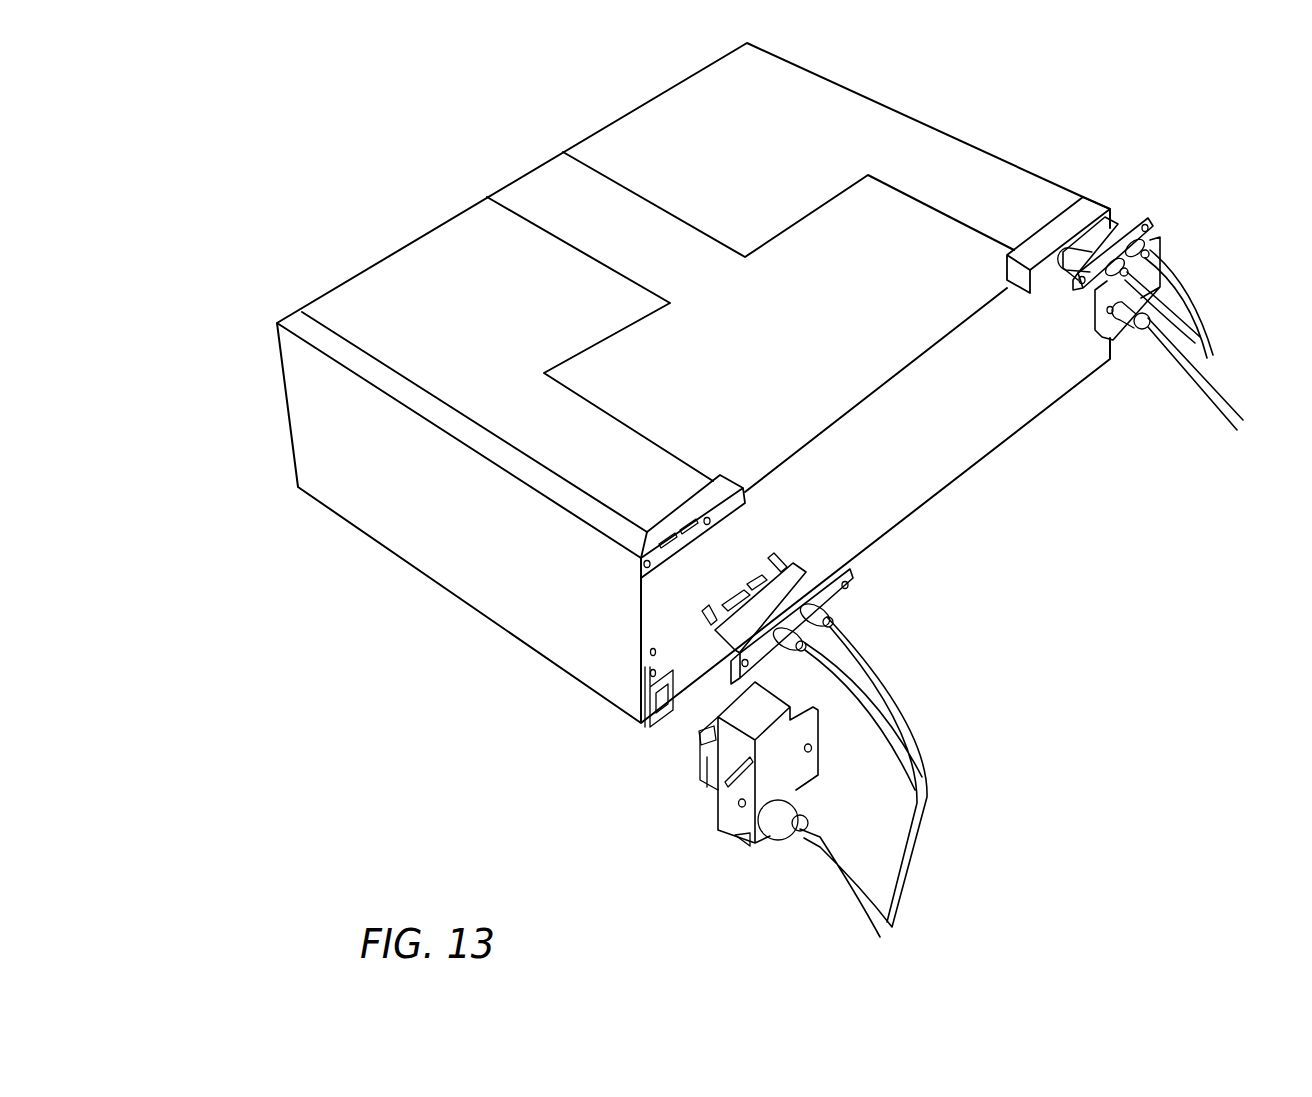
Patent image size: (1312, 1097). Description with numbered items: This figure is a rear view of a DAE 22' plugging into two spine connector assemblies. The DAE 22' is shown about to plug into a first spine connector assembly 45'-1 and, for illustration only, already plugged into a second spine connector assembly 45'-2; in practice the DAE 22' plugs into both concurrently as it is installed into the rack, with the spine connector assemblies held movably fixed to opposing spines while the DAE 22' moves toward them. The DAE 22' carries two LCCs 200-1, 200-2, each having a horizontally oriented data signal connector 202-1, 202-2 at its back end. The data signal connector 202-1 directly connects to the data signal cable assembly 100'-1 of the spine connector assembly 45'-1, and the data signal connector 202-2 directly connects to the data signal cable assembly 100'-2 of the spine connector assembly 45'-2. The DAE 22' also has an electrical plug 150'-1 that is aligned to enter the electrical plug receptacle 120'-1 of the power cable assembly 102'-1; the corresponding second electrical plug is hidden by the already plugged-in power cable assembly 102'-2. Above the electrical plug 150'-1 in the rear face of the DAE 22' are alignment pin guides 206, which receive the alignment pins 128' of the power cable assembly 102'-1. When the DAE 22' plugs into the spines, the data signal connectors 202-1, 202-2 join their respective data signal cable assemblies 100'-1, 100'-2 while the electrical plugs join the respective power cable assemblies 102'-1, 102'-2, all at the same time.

The DAE 22' is at (693, 383).
The LCC 200-1 is at (496, 343).
The LCC 200-2 is at (781, 142).
The data signal connector 202-1 is at (725, 478).
The data signal connector 202-2 is at (1024, 252).
The alignment pin guides 206 is at (649, 673).
The electrical plug 150'-1 is at (635, 735).
The data signal cable assembly 100'-1 is at (789, 580).
The data signal cable assembly 100'-2 is at (1105, 221).
The power cable assembly 102'-1 is at (766, 809).
The power cable assembly 102'-2 is at (1067, 306).
The electrical plug receptacle 120'-1 is at (661, 789).
The alignment pins 128' is at (696, 693).
The spine connector assembly 45'-1 is at (902, 751).
The spine connector assembly 45'-2 is at (1190, 298).